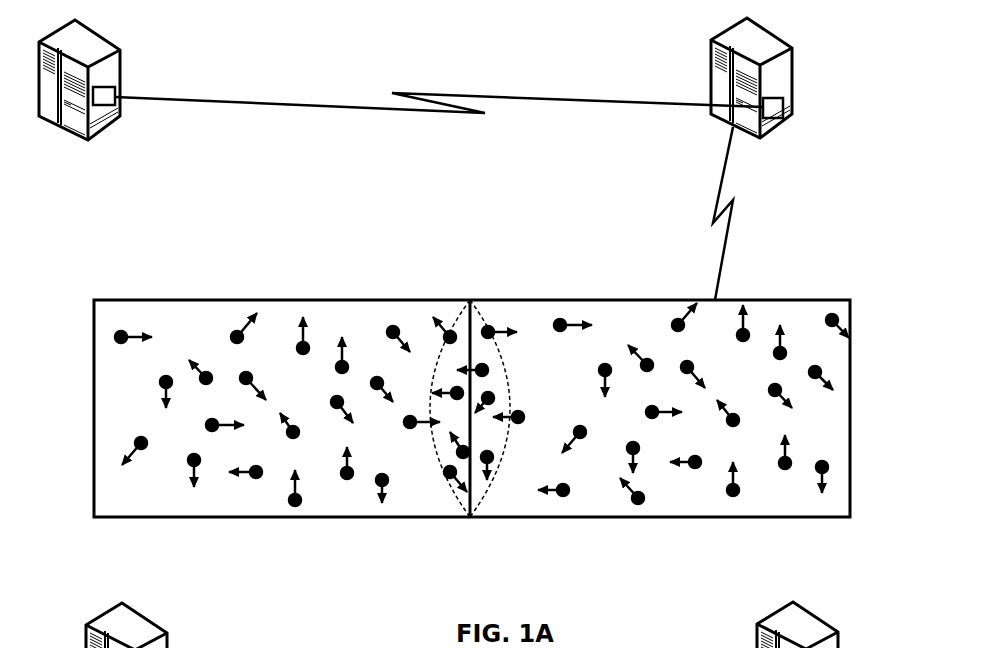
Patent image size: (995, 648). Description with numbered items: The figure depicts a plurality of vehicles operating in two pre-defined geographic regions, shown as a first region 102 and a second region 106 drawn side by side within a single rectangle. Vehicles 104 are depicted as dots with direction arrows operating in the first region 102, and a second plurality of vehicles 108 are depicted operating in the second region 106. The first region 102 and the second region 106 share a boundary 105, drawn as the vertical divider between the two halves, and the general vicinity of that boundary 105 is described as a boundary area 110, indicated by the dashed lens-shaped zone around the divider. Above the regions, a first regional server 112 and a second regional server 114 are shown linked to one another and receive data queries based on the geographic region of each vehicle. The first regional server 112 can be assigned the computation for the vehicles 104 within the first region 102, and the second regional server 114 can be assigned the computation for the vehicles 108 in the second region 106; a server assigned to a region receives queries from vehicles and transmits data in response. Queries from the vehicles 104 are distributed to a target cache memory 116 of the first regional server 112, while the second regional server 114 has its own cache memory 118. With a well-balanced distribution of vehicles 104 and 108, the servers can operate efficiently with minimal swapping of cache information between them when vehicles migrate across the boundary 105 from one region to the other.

The first region 102 is at (282, 454).
The vehicles 104 is at (190, 358).
The boundary 105 is at (468, 322).
The second region 106 is at (660, 454).
The second plurality of vehicles 108 is at (775, 390).
The boundary area 110 is at (485, 322).
The first regional server 112 is at (80, 142).
The second regional server 114 is at (752, 142).
The cache memory 116 is at (108, 86).
The cache memory 118 is at (782, 105).